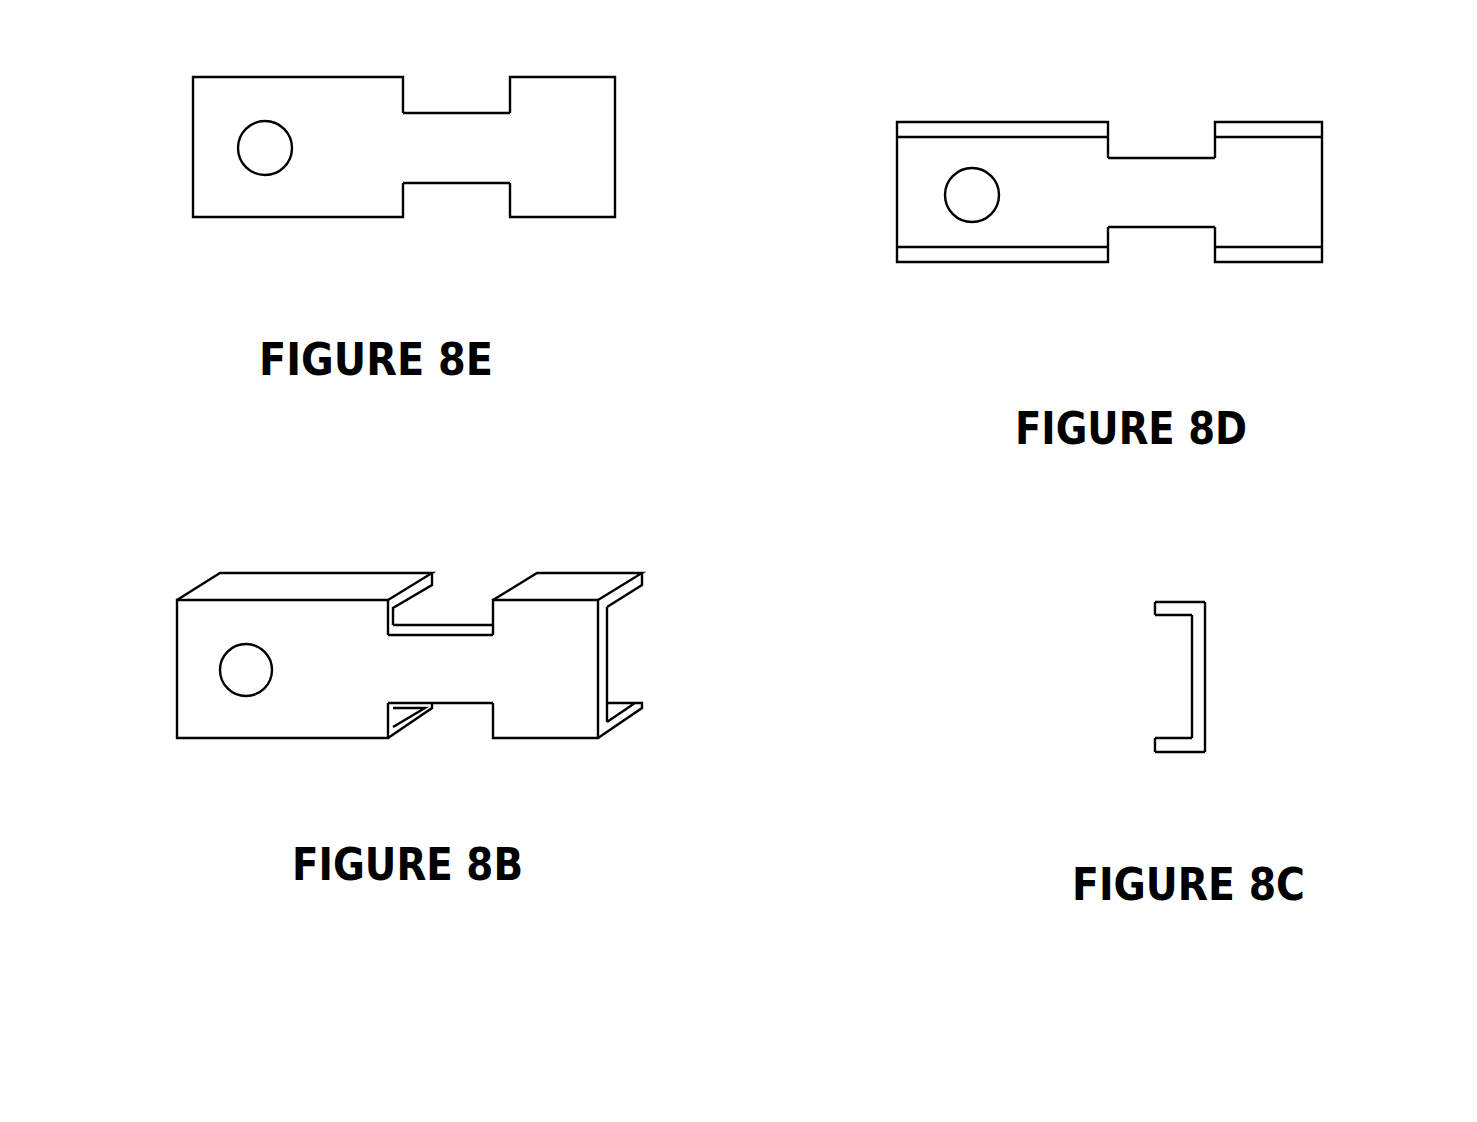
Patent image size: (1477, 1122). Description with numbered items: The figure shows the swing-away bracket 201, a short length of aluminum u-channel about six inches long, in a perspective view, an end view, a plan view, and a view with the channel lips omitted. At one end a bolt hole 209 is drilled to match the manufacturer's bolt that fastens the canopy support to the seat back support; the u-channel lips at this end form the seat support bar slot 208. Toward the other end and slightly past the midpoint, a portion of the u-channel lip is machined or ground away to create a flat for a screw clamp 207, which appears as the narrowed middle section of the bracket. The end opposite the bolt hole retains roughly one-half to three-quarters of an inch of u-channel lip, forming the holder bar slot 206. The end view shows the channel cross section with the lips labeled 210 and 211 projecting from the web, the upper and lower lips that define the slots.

In FIG. 8E, the swing-away bracket 201 is at (214, 112).
In FIG. 8D, the swing-away bracket 201 is at (897, 170).
In FIG. 8B, the swing-away bracket 201 is at (205, 625).
In FIG. 8C, the swing-away bracket 201 is at (1207, 672).
In FIG. 8E, the holder bar slot 206 is at (628, 142).
In FIG. 8D, the holder bar slot 206 is at (1300, 189).
In FIG. 8B, the holder bar slot 206 is at (622, 653).
In FIG. 8C, the holder bar slot 206 is at (1182, 688).
In FIG. 8E, the flat for a screw clamp 207 is at (487, 93).
In FIG. 8D, the flat for a screw clamp 207 is at (1188, 146).
In FIG. 8B, the flat for a screw clamp 207 is at (508, 583).
In FIG. 8E, the seat support bar slot 208 is at (168, 171).
In FIG. 8D, the seat support bar slot 208 is at (912, 193).
In FIG. 8B, the seat support bar slot 208 is at (160, 697).
In FIG. 8E, the bolt hole 209 is at (257, 160).
In FIG. 8D, the bolt hole 209 is at (969, 210).
In FIG. 8B, the bolt hole 209 is at (237, 673).
In FIG. 8D, the upper flange 210 is at (915, 127).
In FIG. 8B, the upper flange 210 is at (407, 580).
In FIG. 8C, the upper flange 210 is at (1162, 602).
In FIG. 8D, the lower flange 211 is at (910, 260).
In FIG. 8B, the lower flange 211 is at (412, 728).
In FIG. 8C, the lower flange 211 is at (1155, 750).